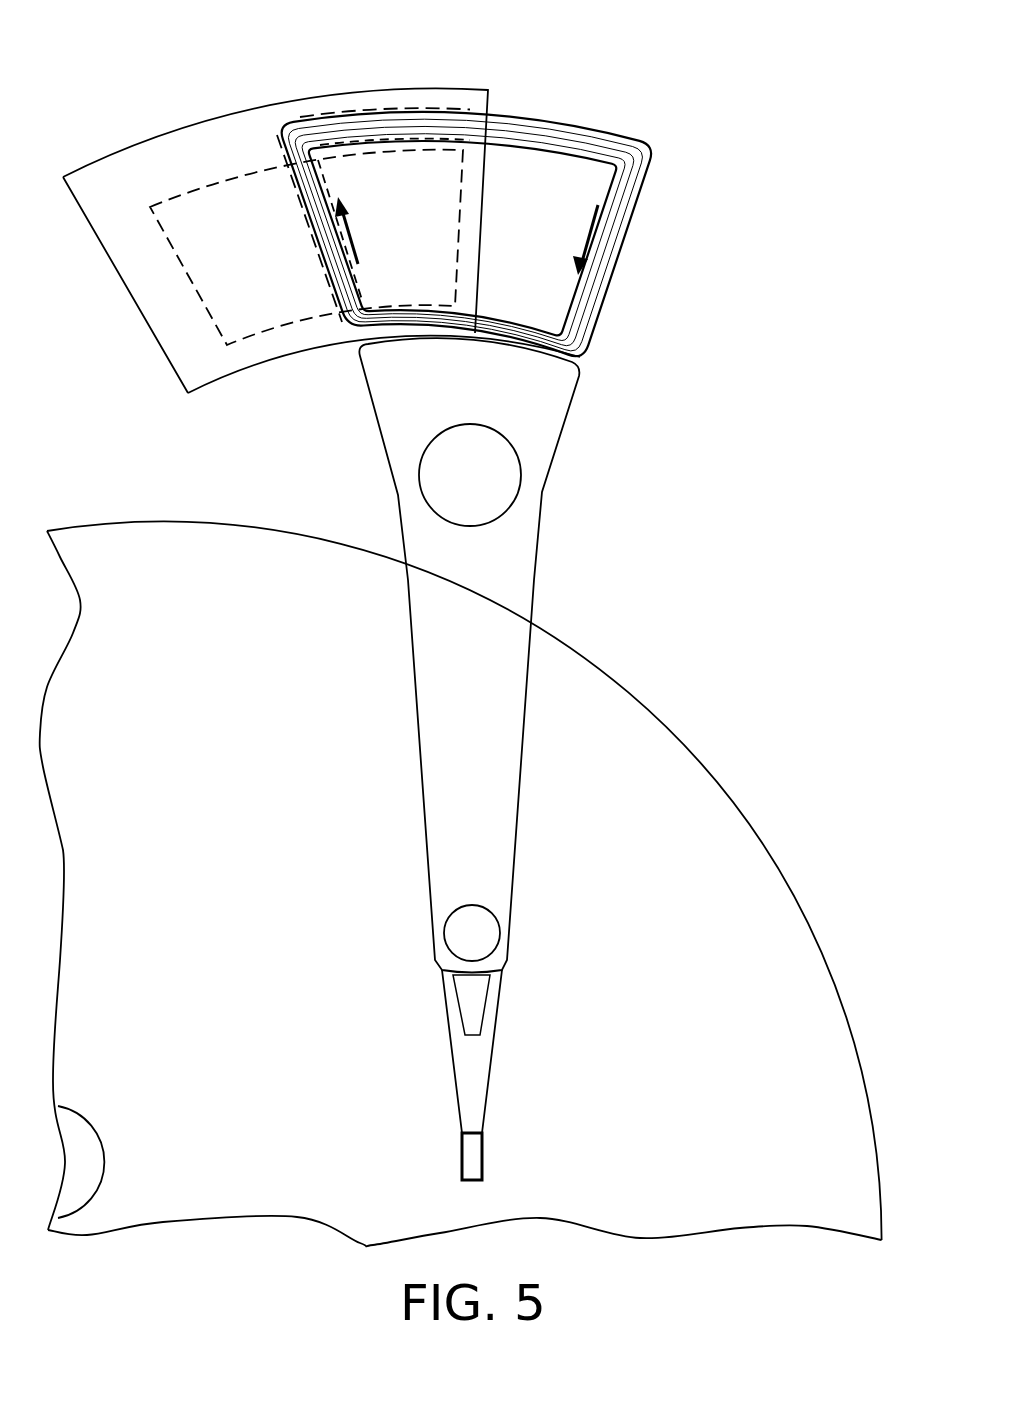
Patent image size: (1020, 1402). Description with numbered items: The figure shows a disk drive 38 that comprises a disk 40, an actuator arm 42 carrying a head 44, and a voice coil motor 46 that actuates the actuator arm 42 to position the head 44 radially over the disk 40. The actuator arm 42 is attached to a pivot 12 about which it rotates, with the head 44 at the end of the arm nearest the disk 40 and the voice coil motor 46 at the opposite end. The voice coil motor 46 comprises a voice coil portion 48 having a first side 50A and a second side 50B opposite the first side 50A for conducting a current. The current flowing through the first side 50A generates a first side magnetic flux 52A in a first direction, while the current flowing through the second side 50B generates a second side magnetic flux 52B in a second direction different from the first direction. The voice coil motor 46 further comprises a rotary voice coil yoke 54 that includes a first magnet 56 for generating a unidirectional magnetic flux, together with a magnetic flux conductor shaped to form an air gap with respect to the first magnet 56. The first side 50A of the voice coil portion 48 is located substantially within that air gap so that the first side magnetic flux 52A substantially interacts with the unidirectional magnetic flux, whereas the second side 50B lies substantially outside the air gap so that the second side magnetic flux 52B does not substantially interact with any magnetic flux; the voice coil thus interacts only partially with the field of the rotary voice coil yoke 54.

The pivot 12 is at (457, 485).
The disk drive 38 is at (798, 184).
The disk 40 is at (662, 711).
The actuator arm 42 is at (517, 817).
The head 44 is at (483, 1160).
The voice coil motor 46 is at (510, 77).
The voice coil portion 48 is at (584, 124).
The first side 50A is at (297, 191).
The second side 50B is at (637, 212).
The first side magnetic flux 52A is at (350, 227).
The second side magnetic flux 52B is at (587, 241).
The rotary voice coil yoke 54 is at (127, 182).
The first magnet 56 is at (234, 287).